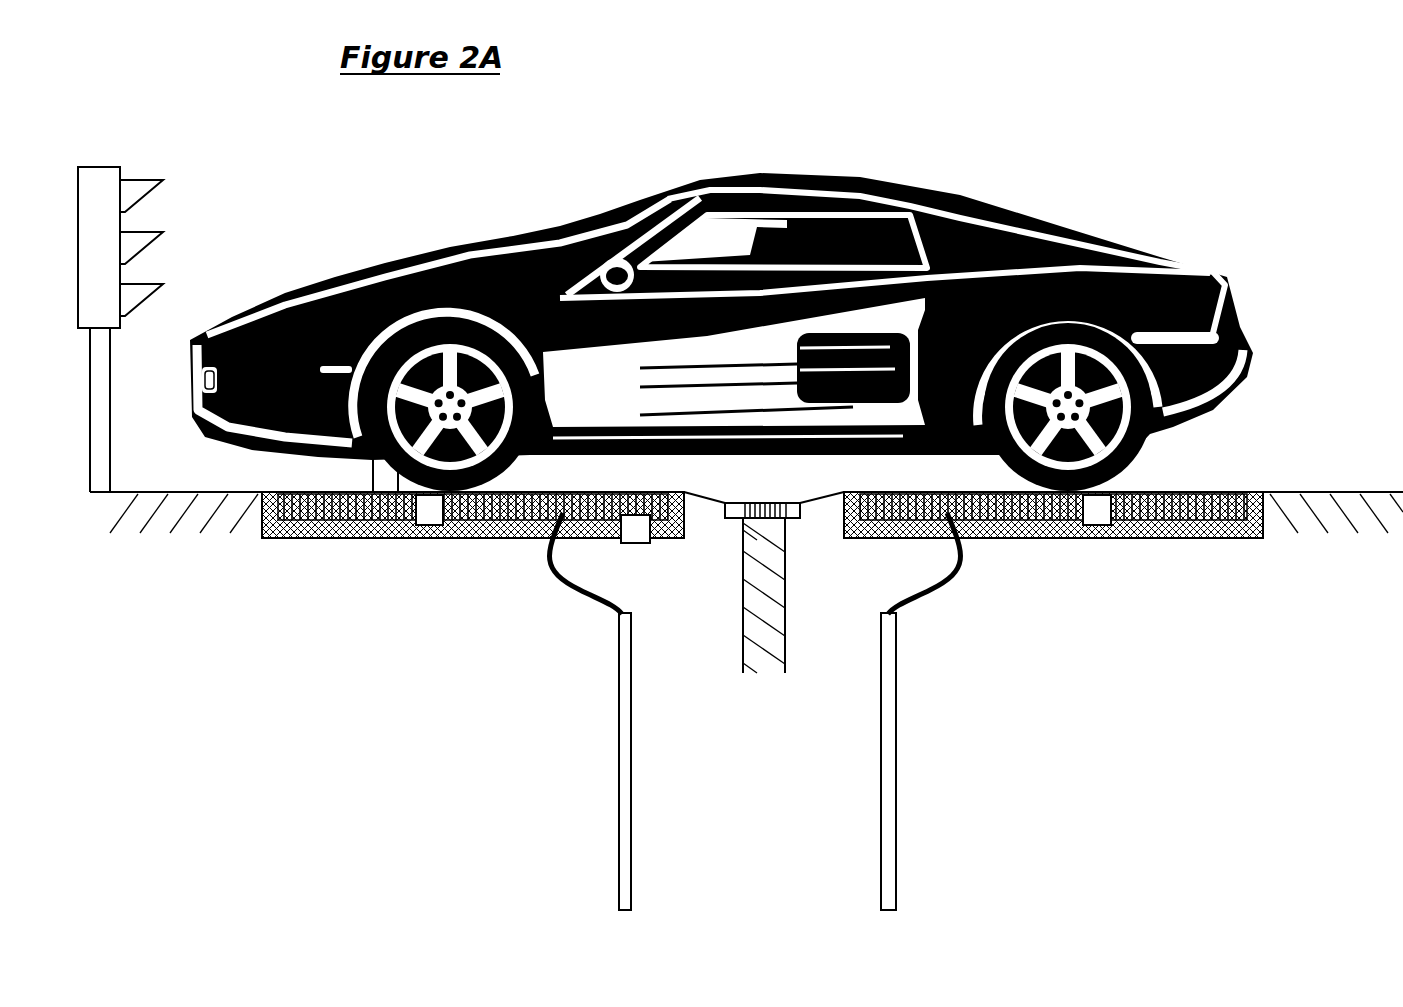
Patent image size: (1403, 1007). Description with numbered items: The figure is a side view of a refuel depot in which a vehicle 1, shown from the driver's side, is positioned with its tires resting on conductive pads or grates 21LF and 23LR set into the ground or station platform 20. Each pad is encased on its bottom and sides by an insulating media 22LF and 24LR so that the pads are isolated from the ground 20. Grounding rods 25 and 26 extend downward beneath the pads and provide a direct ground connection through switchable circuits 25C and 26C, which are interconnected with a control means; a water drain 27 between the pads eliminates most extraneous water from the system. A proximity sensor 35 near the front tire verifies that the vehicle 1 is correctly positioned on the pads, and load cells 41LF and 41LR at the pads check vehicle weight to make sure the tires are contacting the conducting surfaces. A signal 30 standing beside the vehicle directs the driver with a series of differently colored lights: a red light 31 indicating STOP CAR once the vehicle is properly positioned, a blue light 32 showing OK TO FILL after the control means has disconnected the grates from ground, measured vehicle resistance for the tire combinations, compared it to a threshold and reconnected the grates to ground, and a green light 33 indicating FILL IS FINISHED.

The vehicle 1 is at (897, 185).
The ground 20 is at (145, 523).
The conductive pad 21LF is at (341, 503).
The insulating media 22LF is at (510, 537).
The conductive pad 23LR is at (987, 500).
The insulating media 24LR is at (1179, 530).
The grounding rod 25 is at (626, 757).
The switchable circuit 25C is at (571, 590).
The grounding rod 26 is at (893, 757).
The switchable circuit 26C is at (934, 590).
The water drain 27 is at (785, 520).
The signal 30 is at (100, 165).
The red light 31 is at (142, 200).
The blue light 32 is at (142, 252).
The green light 33 is at (142, 304).
The proximity sensor 35 is at (373, 474).
The load cell 41LF is at (430, 525).
The load cell 41LR is at (1097, 525).